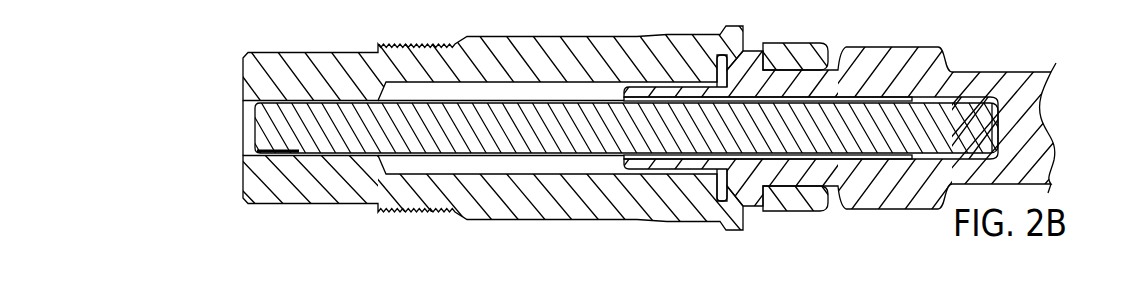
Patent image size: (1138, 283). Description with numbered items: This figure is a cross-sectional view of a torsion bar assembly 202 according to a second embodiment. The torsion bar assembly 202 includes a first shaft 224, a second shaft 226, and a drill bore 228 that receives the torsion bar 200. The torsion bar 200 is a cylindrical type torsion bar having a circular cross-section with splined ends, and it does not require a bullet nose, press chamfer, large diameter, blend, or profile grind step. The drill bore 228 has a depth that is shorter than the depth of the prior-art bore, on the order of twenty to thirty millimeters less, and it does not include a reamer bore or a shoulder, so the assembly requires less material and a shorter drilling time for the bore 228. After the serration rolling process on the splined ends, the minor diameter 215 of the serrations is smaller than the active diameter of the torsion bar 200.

The torsion bar 200 is at (620, 118).
The torsion bar assembly 202 is at (644, 121).
The minor diameter 215 is at (253, 152).
The first shaft 224 is at (500, 56).
The second shaft 226 is at (935, 60).
The drill bore 228 is at (899, 89).